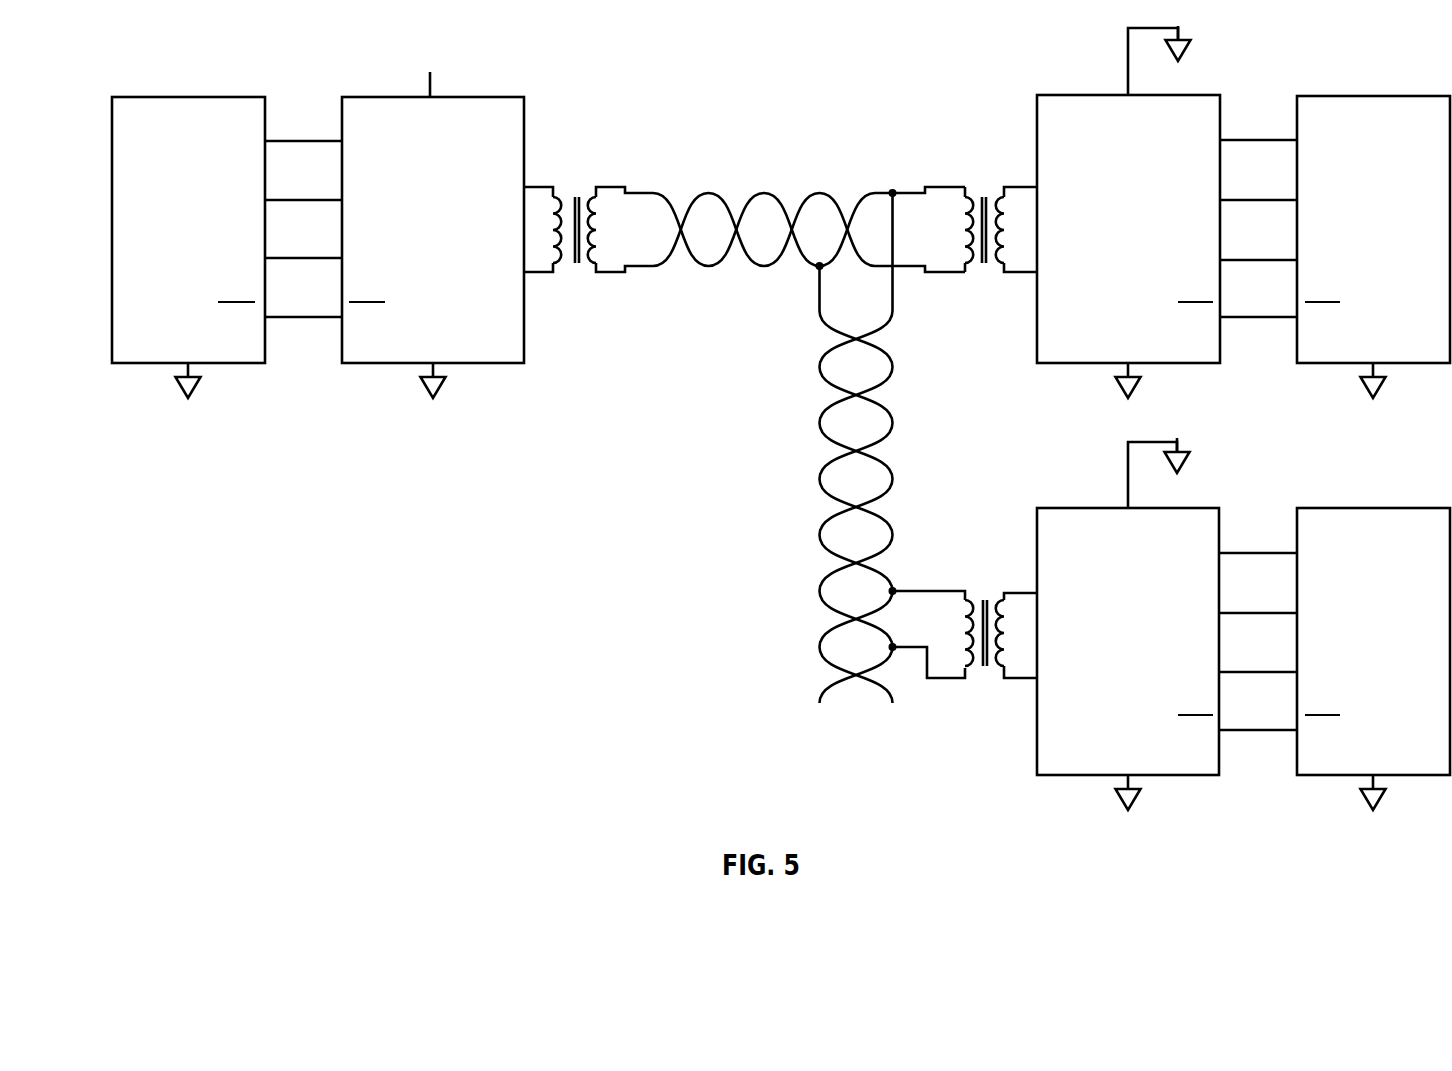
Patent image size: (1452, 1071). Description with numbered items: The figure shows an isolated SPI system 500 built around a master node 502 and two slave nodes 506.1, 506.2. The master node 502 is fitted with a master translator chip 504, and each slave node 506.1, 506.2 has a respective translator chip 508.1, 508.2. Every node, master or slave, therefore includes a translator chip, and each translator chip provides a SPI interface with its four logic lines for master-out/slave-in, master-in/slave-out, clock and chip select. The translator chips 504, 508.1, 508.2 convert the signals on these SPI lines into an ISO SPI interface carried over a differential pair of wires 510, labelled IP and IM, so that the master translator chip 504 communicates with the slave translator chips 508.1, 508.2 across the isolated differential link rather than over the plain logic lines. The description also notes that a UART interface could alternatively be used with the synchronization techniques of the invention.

The isolated SPI system 500 is at (157, 27).
The master node 502 is at (188, 97).
The master translator chip 504 is at (486, 97).
The slave node 506.1 is at (1373, 96).
The slave node 506.2 is at (1377, 508).
The translator chip 508.1 is at (1080, 95).
The translator chip 508.2 is at (1080, 508).
The differential pair of wires 510 is at (683, 181).